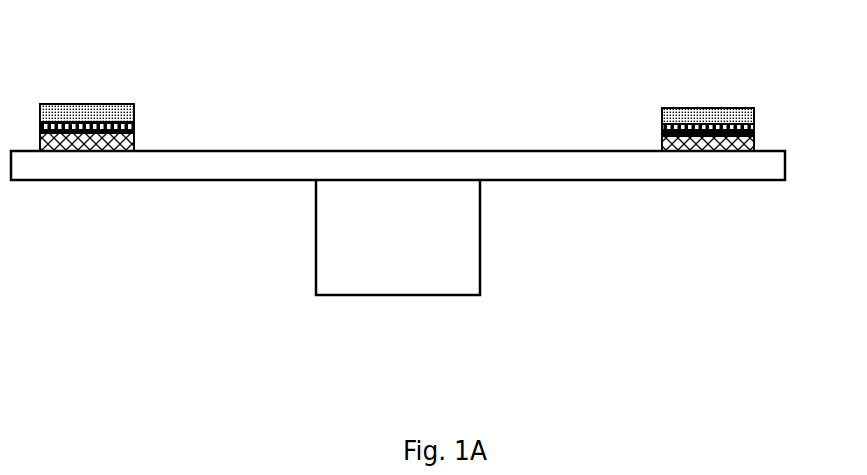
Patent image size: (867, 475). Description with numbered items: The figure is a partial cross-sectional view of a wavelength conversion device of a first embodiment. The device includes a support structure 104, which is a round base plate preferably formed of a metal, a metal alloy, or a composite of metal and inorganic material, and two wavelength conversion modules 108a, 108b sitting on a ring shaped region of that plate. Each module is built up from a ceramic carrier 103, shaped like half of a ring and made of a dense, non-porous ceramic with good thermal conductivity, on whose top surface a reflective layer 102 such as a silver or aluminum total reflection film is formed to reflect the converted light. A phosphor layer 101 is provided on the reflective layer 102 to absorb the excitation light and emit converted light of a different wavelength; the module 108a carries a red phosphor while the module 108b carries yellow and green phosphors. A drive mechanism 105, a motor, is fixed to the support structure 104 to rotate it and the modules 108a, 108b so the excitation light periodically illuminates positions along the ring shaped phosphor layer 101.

The phosphor layer 101 is at (82, 118).
The reflective layer 102 is at (118, 127).
The ceramic carrier 103 is at (131, 120).
The support structure 104 is at (607, 168).
The drive mechanism 105 is at (432, 278).
The wavelength conversion module 108a is at (176, 83).
The wavelength conversion module 108b is at (755, 128).